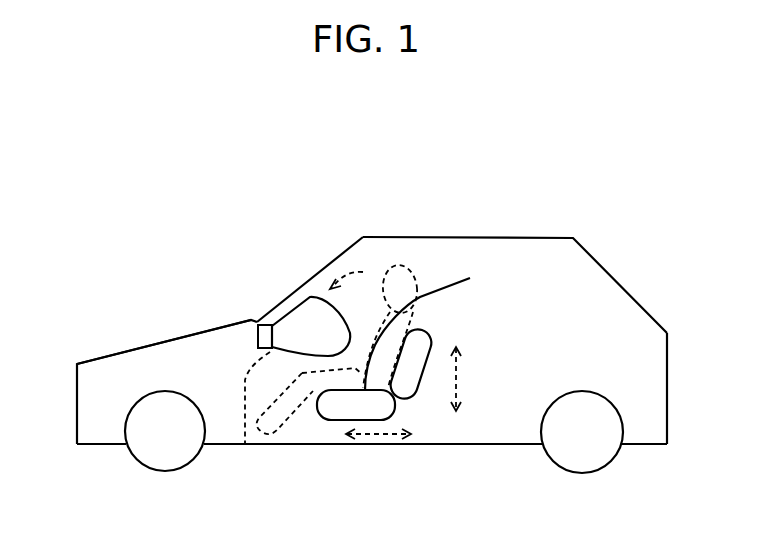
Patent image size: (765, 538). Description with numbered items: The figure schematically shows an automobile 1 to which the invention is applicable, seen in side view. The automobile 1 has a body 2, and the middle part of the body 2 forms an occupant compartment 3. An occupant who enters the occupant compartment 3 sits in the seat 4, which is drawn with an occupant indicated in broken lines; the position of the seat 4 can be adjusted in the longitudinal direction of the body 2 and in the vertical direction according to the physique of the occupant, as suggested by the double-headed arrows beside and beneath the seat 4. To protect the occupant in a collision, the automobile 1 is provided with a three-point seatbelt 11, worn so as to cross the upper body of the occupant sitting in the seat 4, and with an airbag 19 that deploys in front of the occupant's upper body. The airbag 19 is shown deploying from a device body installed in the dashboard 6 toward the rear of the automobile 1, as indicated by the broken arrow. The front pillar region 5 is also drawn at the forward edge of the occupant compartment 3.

The automobile 1 is at (372, 306).
The body 2 is at (162, 363).
The occupant compartment 3 is at (517, 275).
The seat 4 is at (368, 419).
The windshield / front pillar 5 is at (283, 297).
The dashboard 6 is at (244, 402).
The three-point seatbelt 11 is at (455, 278).
The airbag 19 is at (306, 297).